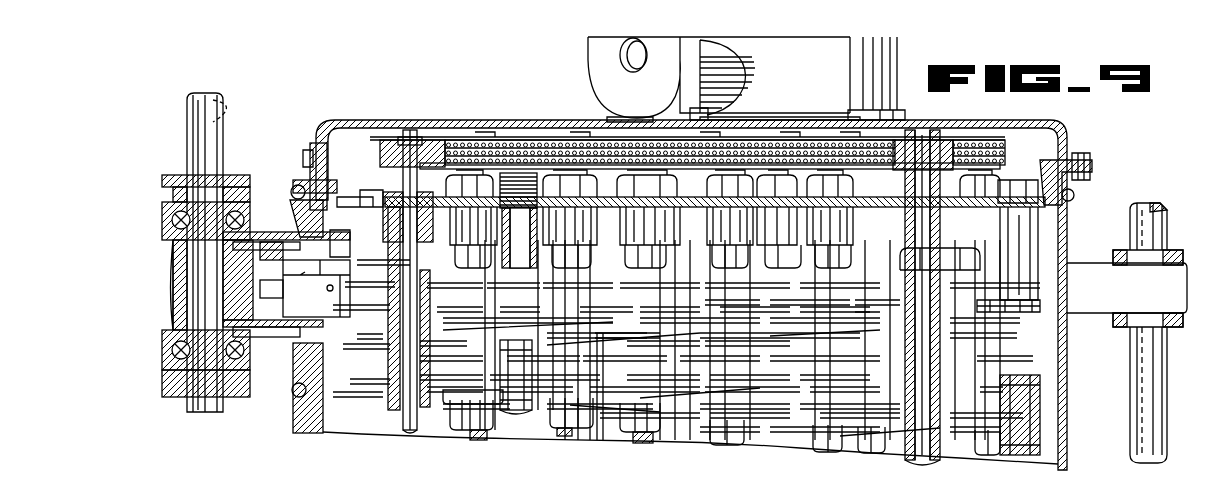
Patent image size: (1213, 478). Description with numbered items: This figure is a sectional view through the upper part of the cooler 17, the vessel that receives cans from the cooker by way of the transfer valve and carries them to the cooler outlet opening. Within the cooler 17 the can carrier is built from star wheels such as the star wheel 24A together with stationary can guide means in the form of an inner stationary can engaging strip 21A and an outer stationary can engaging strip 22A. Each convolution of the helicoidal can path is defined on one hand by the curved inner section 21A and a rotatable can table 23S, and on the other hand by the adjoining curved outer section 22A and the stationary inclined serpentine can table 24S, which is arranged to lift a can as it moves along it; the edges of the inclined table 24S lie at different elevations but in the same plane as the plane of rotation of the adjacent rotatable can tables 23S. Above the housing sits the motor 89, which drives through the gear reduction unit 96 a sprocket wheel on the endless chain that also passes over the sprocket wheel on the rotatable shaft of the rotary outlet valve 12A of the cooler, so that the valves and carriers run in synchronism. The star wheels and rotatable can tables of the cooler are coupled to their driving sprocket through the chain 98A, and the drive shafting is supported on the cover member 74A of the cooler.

The rotary outlet valve 12A is at (250, 177).
The cover member 74A is at (394, 128).
The chain 98A is at (510, 140).
The motor 89 is at (597, 57).
The gear reduction unit 96 is at (858, 68).
The star wheel 24A is at (704, 300).
The outer stationary can engaging strip 22A is at (870, 312).
The inner stationary can engaging strip 21A is at (1045, 323).
The cooler 17 is at (1067, 427).
The stationary inclined serpentine can table 24S is at (600, 340).
The rotatable can table 23S is at (372, 392).